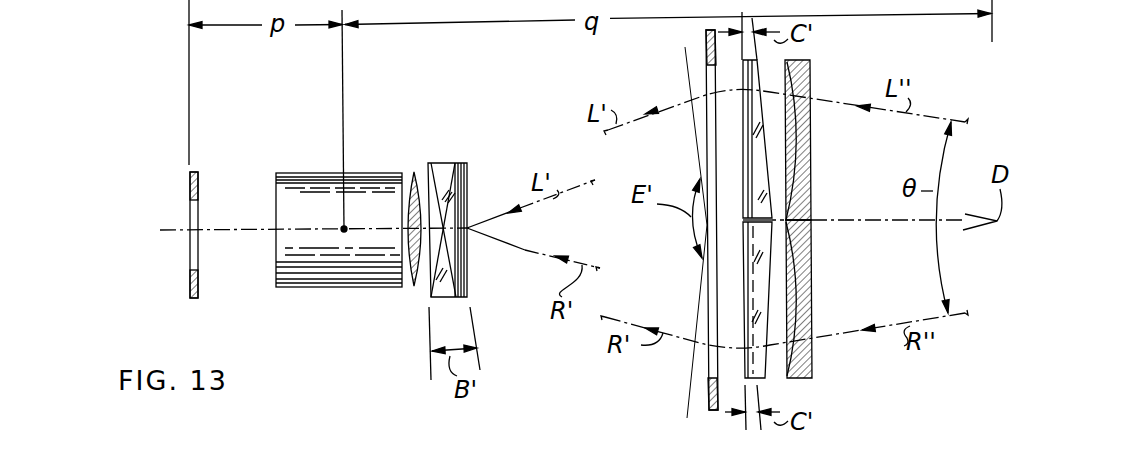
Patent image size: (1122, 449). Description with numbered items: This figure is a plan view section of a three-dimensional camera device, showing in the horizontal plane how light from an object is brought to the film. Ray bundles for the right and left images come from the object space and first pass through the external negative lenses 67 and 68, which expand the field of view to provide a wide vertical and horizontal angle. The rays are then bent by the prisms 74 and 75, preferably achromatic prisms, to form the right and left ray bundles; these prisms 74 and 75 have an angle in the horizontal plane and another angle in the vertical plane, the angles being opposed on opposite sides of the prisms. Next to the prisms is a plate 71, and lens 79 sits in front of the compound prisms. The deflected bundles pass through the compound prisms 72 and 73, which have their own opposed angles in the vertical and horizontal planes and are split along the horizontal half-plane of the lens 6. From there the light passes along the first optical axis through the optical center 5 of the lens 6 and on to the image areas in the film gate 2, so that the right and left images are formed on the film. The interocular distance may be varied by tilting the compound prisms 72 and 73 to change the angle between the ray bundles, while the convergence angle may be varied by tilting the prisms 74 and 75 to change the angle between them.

The film gate 2 is at (198, 179).
The optical center 5 is at (344, 233).
The lens 6 is at (307, 190).
The field lens 79 is at (413, 172).
The compound prism 72 is at (440, 163).
The compound prism 73 is at (432, 298).
The tiltable glass plate 71 is at (708, 45).
The prism 74 is at (747, 147).
The prism 75 is at (748, 298).
The external negative lens 67 is at (810, 69).
The external negative lens 68 is at (813, 353).